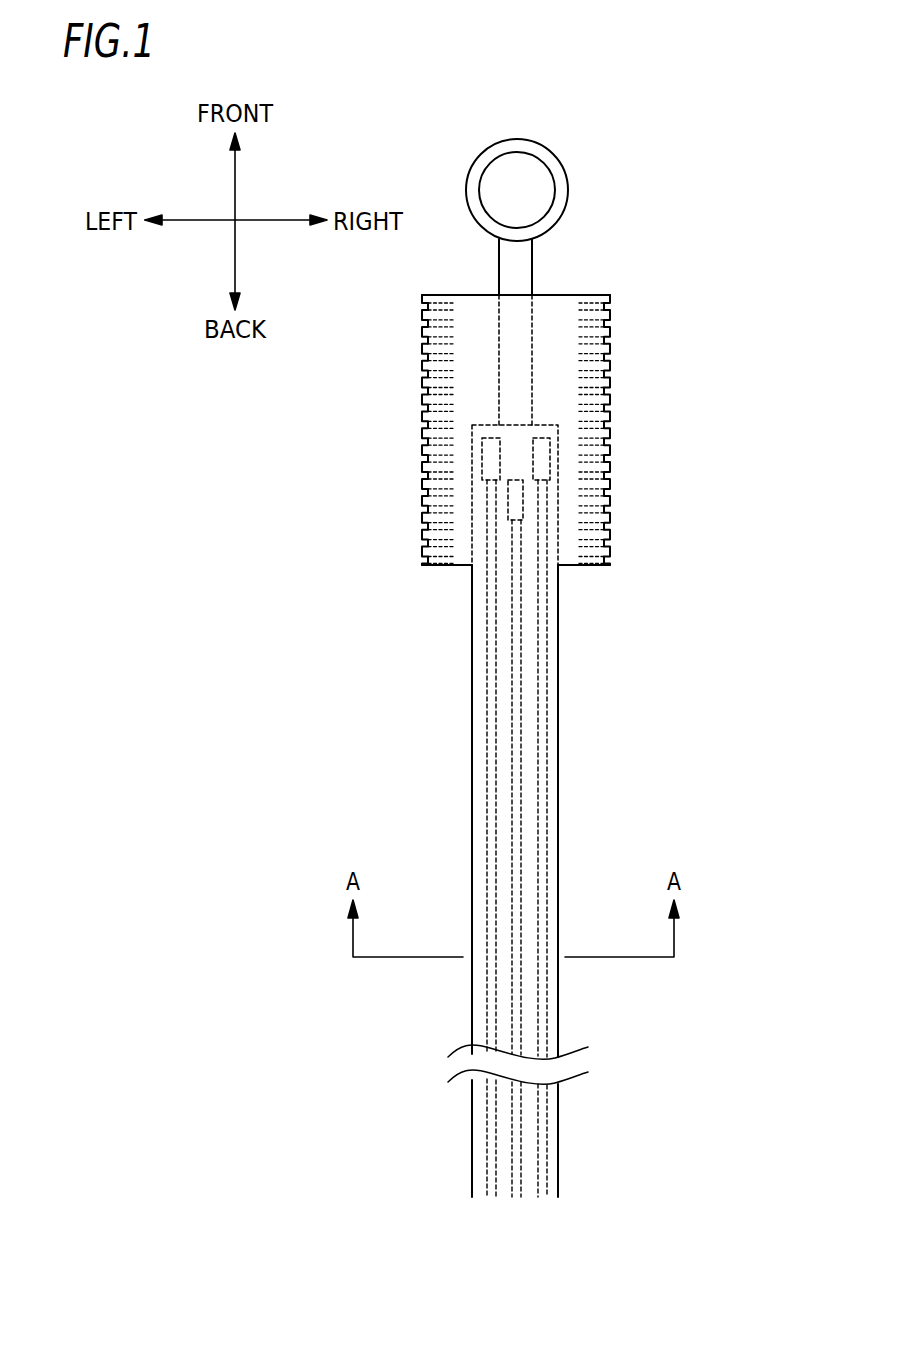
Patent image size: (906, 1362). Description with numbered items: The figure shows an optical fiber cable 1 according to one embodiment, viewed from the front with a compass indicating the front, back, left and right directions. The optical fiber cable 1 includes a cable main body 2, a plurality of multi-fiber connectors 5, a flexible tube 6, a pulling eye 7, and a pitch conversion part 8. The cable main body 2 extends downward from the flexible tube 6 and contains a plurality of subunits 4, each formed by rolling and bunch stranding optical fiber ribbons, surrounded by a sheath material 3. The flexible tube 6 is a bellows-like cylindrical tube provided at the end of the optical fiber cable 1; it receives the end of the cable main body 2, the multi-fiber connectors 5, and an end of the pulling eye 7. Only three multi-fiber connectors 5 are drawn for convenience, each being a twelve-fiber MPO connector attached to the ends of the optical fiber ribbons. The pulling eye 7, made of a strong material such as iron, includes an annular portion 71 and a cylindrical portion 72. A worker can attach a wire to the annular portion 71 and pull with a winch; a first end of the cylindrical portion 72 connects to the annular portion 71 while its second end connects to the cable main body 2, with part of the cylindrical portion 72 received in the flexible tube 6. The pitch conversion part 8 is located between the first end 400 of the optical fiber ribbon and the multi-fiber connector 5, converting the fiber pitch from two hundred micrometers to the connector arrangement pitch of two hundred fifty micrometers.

The optical fiber cable 1 is at (700, 190).
The cable main body 2 is at (560, 722).
The sheath material 3 is at (560, 880).
The subunit 4 is at (549, 650).
The multi-fiber connector 5 is at (553, 428).
The flexible tube 6 is at (611, 355).
The pulling eye 7 is at (640, 155).
The annular portion 71 is at (566, 178).
The cylindrical portion 72 is at (534, 258).
The pitch conversion part 8 is at (545, 486).
The first end of the optical fiber ribbon 400 is at (524, 488).